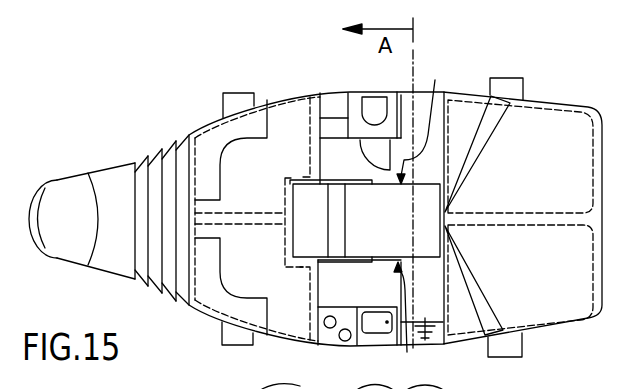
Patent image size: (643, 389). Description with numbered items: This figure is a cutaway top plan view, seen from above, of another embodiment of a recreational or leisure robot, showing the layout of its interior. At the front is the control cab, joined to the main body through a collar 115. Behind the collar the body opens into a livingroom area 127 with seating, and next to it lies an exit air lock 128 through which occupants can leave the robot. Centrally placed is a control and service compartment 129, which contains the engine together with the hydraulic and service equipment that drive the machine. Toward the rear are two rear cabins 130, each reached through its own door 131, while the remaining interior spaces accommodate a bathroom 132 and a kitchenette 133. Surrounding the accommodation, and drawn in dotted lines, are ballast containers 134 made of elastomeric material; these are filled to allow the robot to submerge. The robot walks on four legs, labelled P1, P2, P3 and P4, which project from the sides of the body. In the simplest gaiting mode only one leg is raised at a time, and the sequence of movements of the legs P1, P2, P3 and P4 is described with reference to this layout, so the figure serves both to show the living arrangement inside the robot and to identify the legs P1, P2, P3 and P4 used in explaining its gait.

The collar 115 is at (173, 163).
The livingroom area 127 is at (226, 296).
The exit air lock 128 is at (308, 198).
The control and service compartment 129 is at (365, 221).
The rear cabins 130 is at (533, 140).
The doors 131 is at (426, 216).
The bathroom 132 is at (375, 107).
The kitchenette 133 is at (372, 326).
The ballast containers 134 is at (287, 330).
The leg P1 is at (238, 347).
The leg P2 is at (238, 93).
The leg P3 is at (505, 357).
The leg P4 is at (506, 75).